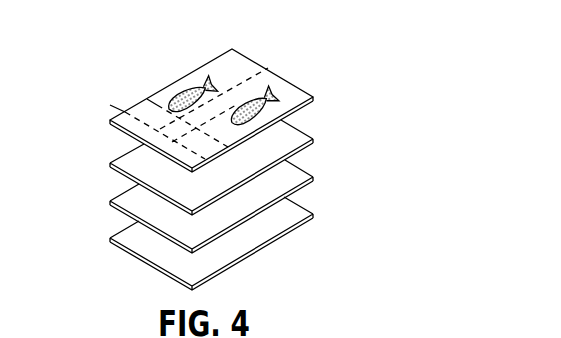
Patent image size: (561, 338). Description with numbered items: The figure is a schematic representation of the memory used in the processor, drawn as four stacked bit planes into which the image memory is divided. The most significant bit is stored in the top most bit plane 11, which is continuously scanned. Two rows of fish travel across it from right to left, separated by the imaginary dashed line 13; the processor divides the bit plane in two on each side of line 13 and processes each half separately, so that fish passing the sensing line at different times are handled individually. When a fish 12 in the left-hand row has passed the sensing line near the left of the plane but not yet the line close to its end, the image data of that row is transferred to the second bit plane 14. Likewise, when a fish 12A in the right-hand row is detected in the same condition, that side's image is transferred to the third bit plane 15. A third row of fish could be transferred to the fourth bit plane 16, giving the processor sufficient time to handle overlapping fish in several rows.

The top most bit plane 11 is at (300, 90).
The fish 12 is at (205, 84).
The fish 12A is at (277, 88).
The imaginary dashed line 13 is at (248, 85).
The second bit plane 14 is at (298, 130).
The third bit plane 15 is at (298, 167).
The fourth bit plane 16 is at (298, 203).